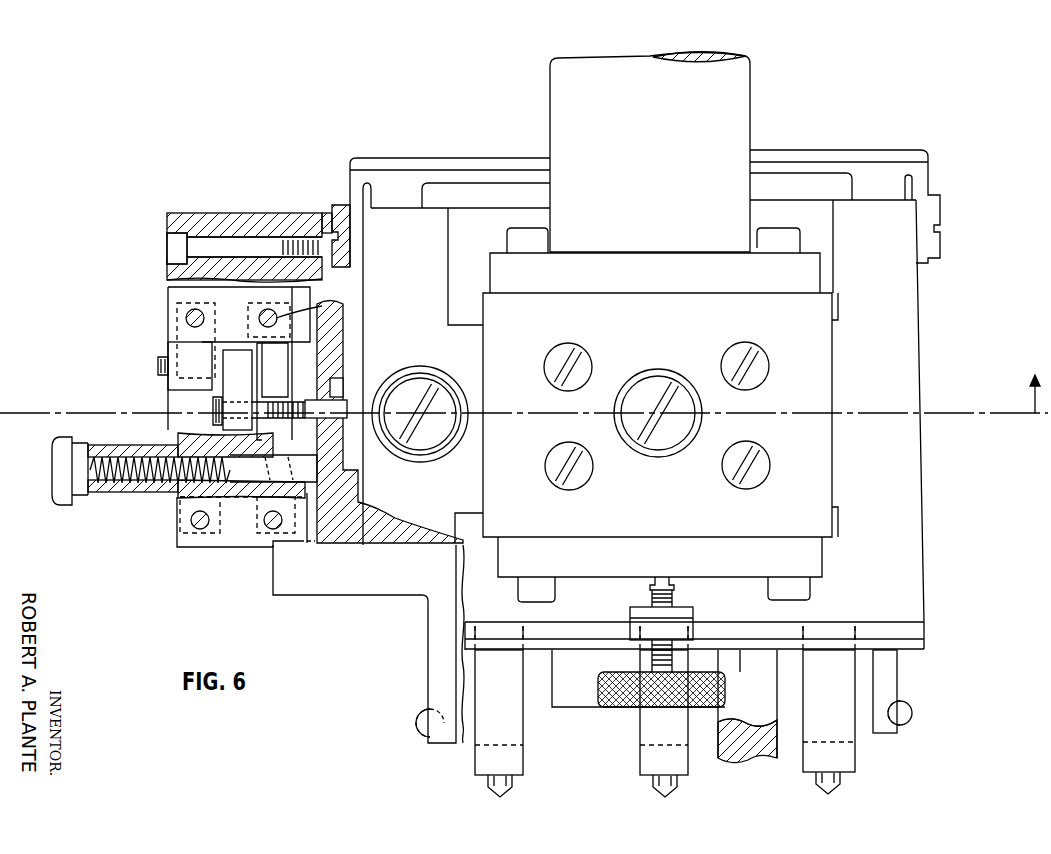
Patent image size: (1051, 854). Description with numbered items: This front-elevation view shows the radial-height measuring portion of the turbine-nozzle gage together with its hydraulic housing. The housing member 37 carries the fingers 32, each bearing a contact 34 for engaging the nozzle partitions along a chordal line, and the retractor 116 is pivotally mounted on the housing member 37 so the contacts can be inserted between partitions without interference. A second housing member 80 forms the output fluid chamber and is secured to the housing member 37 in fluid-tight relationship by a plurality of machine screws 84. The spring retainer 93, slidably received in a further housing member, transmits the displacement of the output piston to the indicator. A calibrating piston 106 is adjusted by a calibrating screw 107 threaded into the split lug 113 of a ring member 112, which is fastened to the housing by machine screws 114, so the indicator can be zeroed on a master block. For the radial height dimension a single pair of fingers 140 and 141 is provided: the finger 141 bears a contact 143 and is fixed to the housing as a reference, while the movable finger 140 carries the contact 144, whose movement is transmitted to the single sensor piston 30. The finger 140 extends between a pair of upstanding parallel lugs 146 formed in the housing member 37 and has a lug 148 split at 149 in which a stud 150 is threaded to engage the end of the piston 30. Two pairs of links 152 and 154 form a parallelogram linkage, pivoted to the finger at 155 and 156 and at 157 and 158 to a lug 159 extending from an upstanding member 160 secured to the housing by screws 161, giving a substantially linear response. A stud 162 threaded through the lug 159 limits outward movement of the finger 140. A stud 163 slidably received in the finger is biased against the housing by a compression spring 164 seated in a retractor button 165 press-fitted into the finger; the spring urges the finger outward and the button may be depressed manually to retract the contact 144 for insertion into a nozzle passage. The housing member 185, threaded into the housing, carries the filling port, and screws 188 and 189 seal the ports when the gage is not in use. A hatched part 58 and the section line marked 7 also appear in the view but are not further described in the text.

The section line arrow 7 is at (524, 381).
The sensor piston 30 is at (364, 388).
The finger 32 is at (489, 766).
The contact 34 is at (509, 790).
The housing member 37 is at (397, 311).
The support post 58 is at (737, 717).
The housing member 80 is at (647, 521).
The machine screws 84 is at (586, 370).
The spring retainer 93 is at (639, 167).
The calibrating piston 106 is at (674, 584).
The calibrating screw 107 is at (725, 690).
The ring member 112 is at (714, 562).
The split lug 113 is at (648, 641).
The machine screws 114 is at (530, 598).
The retractor 116 is at (843, 150).
The movable finger 140 is at (428, 696).
The fixed finger 141 is at (897, 691).
The contact 143 is at (912, 717).
The contact 144 is at (416, 723).
The upstanding parallel lugs 146 is at (177, 532).
The lug 148 is at (237, 390).
The split 149 is at (263, 387).
The stud 150 is at (210, 412).
The links 152 is at (173, 303).
The links 154 is at (311, 299).
The pivot 155 is at (200, 530).
The pivot 156 is at (273, 530).
The pivot 157 is at (186, 318).
The pivot 158 is at (320, 308).
The lug 159 is at (178, 390).
The upstanding member 160 is at (232, 213).
The screws 161 is at (145, 250).
The stud 162 is at (158, 366).
The stud 163 is at (306, 457).
The compression spring 164 is at (118, 492).
The retractor button 165 is at (52, 470).
The housing member 185 is at (414, 462).
The screw 188 is at (428, 452).
The screw 189 is at (665, 447).